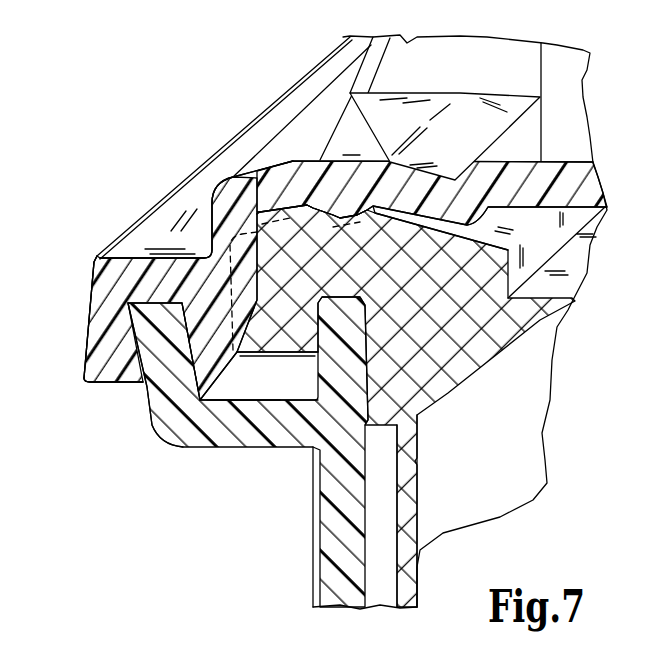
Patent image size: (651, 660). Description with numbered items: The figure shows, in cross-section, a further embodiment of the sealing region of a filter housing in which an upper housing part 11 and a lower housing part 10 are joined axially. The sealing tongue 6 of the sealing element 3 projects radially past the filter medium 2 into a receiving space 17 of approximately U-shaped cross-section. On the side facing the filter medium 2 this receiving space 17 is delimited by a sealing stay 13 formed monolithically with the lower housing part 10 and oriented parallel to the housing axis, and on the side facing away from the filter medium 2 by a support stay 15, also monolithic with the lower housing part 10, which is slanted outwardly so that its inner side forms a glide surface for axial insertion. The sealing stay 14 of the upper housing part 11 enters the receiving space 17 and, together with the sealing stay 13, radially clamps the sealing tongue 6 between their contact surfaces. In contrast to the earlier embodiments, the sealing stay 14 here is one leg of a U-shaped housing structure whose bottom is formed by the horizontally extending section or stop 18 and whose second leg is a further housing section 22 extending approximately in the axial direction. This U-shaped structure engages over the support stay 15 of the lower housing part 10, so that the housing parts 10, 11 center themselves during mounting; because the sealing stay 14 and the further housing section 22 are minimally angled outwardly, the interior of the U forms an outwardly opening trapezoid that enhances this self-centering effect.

The filter medium 2 is at (540, 482).
The sealing element 3 is at (280, 250).
The sealing tongue 6 is at (300, 323).
The lower housing part 10 is at (333, 547).
The upper housing part 11 is at (273, 123).
The sealing stay 13 is at (360, 390).
The sealing stay 14 is at (210, 363).
The support stay 15 is at (170, 397).
The receiving space 17 is at (246, 393).
The horizontally extending section or stop 18 is at (110, 253).
The further housing section 22 is at (103, 350).